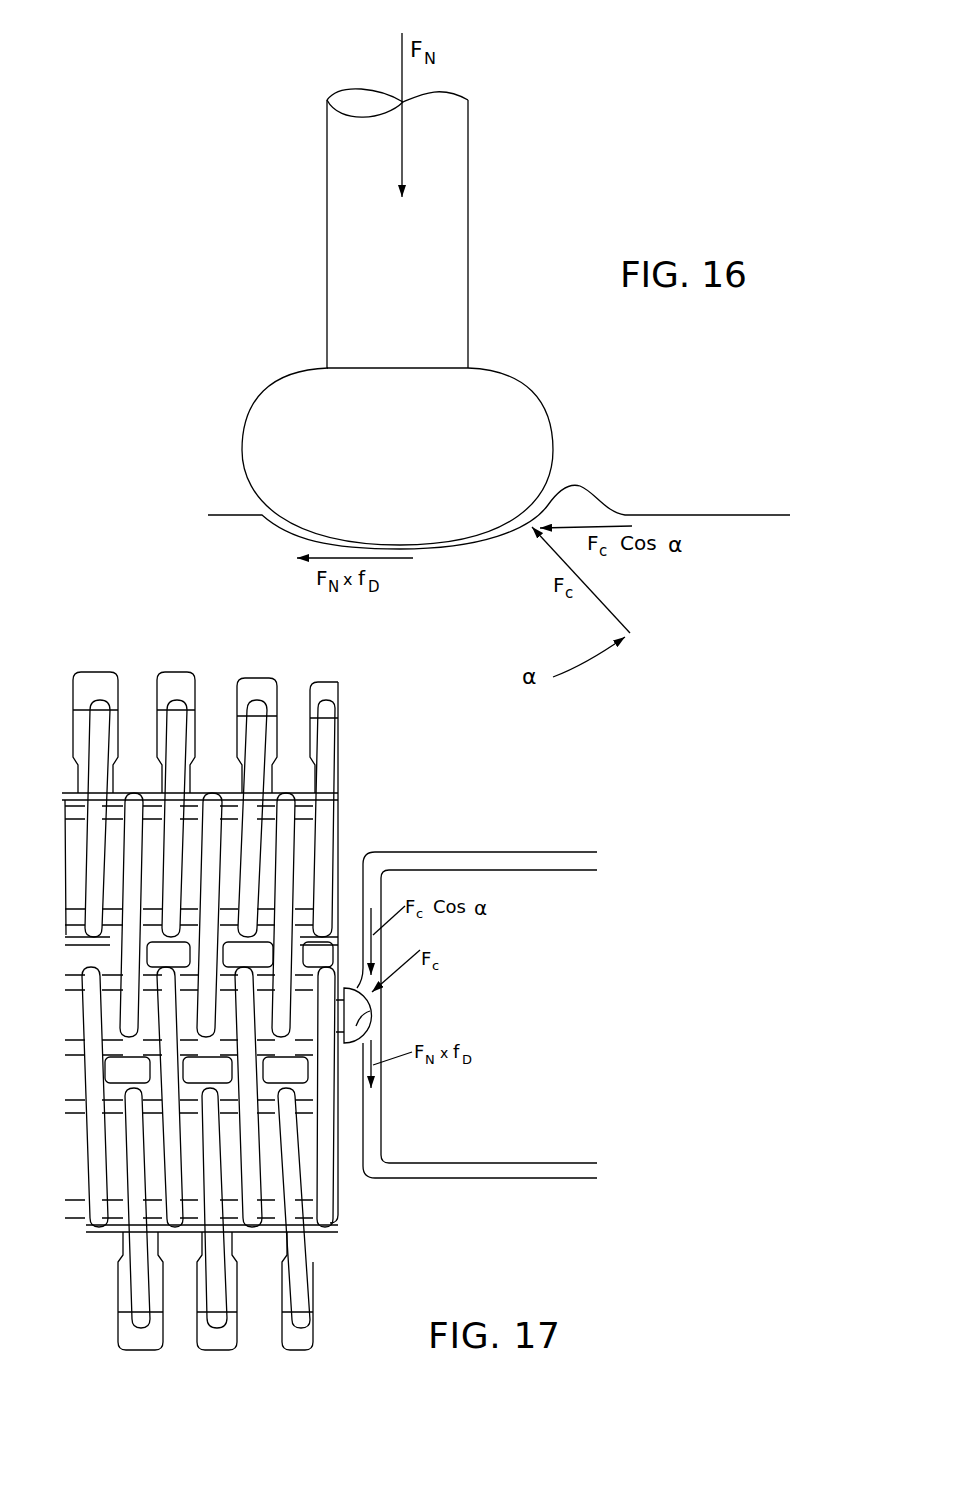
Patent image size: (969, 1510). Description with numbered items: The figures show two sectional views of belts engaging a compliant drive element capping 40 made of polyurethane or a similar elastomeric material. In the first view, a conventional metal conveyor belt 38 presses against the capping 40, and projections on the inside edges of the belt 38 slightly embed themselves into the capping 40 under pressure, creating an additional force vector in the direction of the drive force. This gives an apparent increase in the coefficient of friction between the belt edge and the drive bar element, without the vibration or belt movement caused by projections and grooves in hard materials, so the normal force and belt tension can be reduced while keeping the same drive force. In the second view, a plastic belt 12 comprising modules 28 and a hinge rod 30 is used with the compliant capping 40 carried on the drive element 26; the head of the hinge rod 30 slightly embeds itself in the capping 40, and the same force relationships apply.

In FIG. 17, the plastic belt 12 is at (246, 1009).
In FIG. 17, the guide rail 26 is at (477, 1016).
In FIG. 17, the modules 28 is at (172, 705).
In FIG. 17, the hinge rod 30 is at (380, 1013).
In FIG. 16, the belt 38 is at (478, 154).
In FIG. 16, the drive element capping 40 is at (737, 525).
In FIG. 17, the drive element capping 40 is at (462, 1176).